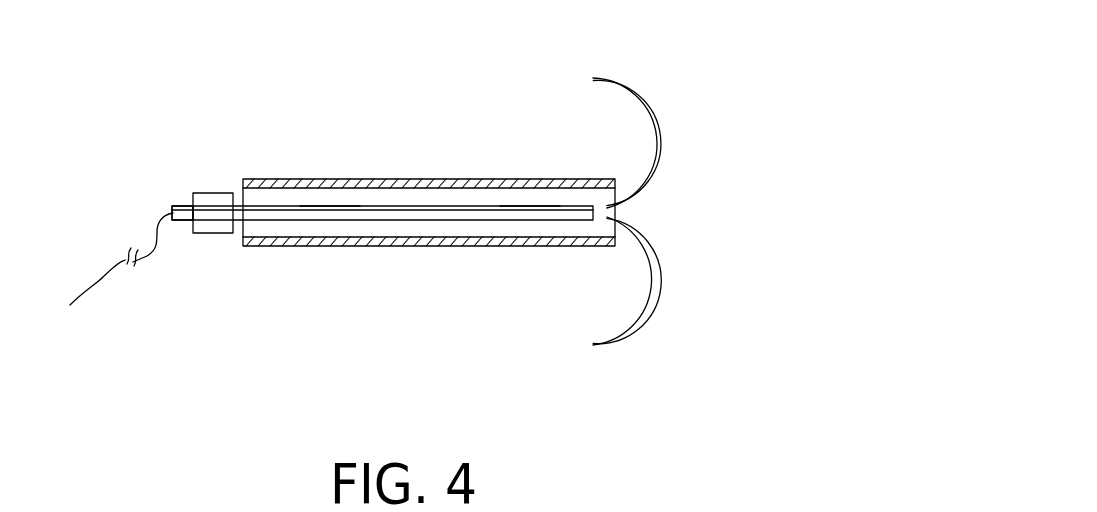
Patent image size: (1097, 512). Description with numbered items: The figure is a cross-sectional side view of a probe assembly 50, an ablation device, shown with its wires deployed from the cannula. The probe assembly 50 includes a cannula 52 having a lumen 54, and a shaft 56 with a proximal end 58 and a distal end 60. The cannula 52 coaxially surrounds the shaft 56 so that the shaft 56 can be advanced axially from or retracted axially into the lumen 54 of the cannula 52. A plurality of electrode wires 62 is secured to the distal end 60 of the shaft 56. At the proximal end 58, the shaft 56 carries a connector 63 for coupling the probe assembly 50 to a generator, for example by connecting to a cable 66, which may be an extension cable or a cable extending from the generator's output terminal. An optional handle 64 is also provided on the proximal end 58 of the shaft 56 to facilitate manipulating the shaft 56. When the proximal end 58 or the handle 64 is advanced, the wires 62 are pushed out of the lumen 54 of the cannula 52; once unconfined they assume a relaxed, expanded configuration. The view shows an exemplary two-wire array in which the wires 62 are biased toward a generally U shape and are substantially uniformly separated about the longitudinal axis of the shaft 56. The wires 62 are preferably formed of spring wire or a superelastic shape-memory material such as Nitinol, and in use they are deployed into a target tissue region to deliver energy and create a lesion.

The probe assembly 50 is at (460, 77).
The cannula 52 is at (410, 247).
The lumen 54 is at (490, 227).
The shaft 56 is at (332, 207).
The proximal end 58 is at (307, 220).
The distal end 60 is at (532, 205).
The electrode wires 62 is at (668, 148).
The connector 63 is at (182, 206).
The handle 64 is at (213, 233).
The cable 66 is at (103, 277).